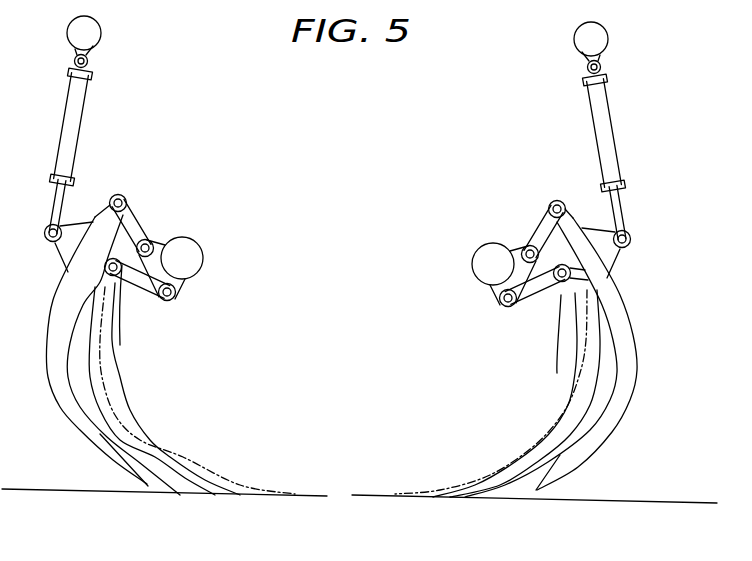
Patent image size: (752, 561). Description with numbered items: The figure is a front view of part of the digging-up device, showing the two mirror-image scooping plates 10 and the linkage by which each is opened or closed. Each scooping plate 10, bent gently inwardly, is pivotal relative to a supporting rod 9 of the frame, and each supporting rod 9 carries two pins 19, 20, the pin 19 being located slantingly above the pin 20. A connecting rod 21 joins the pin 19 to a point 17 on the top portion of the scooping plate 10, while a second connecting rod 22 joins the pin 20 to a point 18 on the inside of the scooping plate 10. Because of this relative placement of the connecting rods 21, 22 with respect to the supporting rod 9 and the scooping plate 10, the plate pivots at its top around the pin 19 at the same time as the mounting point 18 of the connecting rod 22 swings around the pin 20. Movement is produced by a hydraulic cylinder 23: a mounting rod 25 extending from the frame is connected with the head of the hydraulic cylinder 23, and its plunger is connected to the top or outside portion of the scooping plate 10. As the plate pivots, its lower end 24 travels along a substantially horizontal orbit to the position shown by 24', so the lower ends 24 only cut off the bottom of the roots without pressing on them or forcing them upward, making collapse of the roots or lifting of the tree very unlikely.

The supporting rod 9 is at (195, 258).
The scooping plate 10 is at (612, 398).
The point on the top portion of the scooping plate 17 is at (117, 194).
The point on the inside of the scooping plate 18 is at (121, 337).
The pin 19 is at (150, 242).
The pin 20 is at (173, 298).
The connecting rod 21 is at (132, 220).
The connecting rod 22 is at (136, 283).
The hydraulic cylinder 23 is at (67, 128).
The lower end of the scooping plate 24 is at (330, 489).
The position of the lower end 24' is at (343, 419).
The mounting rod 25 is at (90, 30).